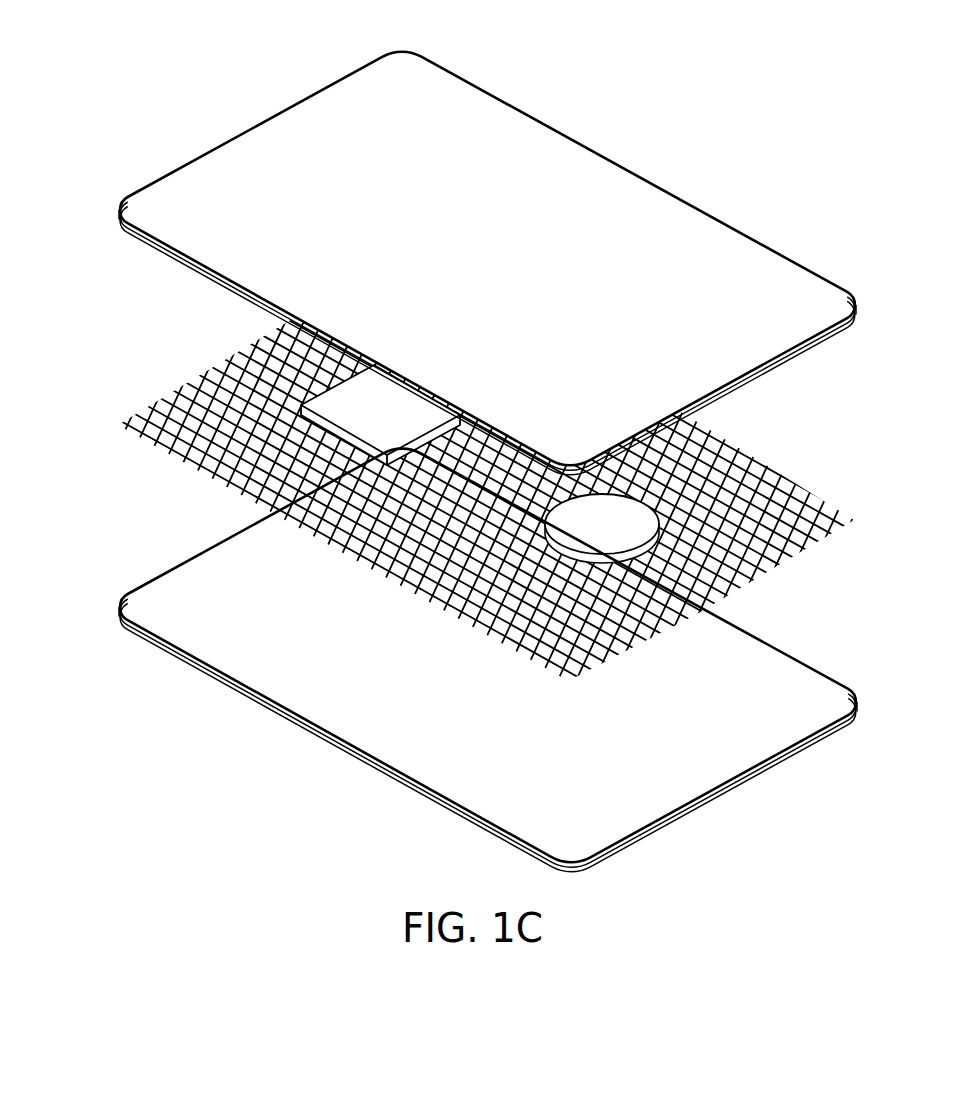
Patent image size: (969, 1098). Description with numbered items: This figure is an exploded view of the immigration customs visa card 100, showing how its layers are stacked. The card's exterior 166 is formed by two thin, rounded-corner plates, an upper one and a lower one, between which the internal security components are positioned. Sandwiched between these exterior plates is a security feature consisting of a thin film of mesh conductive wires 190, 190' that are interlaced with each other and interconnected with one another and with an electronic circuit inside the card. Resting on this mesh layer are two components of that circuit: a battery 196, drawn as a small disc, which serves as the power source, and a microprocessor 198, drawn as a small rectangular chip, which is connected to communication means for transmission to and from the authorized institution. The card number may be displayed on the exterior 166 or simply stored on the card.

The immigration customs visa card 100 is at (92, 297).
The card exterior 166 is at (525, 143).
The mesh conductive wires 190 is at (440, 470).
The mesh conductive wires 190' is at (685, 470).
The battery 196 is at (618, 522).
The microprocessor 198 is at (357, 393).